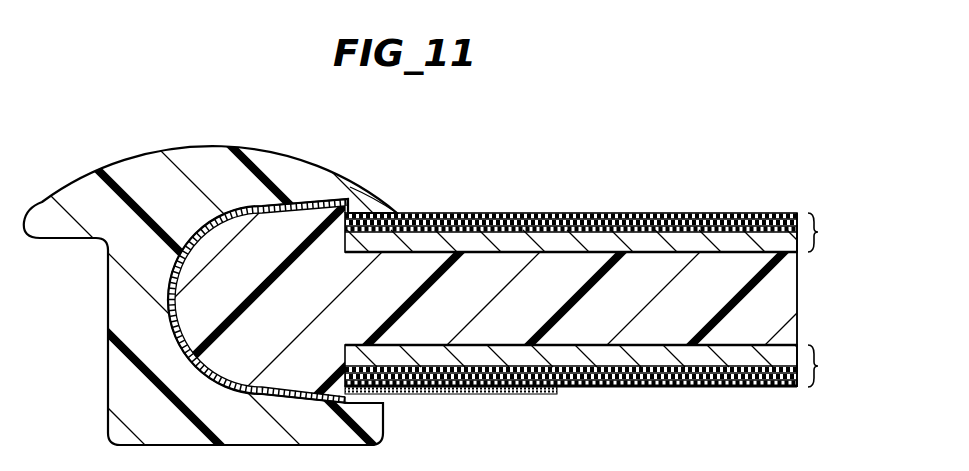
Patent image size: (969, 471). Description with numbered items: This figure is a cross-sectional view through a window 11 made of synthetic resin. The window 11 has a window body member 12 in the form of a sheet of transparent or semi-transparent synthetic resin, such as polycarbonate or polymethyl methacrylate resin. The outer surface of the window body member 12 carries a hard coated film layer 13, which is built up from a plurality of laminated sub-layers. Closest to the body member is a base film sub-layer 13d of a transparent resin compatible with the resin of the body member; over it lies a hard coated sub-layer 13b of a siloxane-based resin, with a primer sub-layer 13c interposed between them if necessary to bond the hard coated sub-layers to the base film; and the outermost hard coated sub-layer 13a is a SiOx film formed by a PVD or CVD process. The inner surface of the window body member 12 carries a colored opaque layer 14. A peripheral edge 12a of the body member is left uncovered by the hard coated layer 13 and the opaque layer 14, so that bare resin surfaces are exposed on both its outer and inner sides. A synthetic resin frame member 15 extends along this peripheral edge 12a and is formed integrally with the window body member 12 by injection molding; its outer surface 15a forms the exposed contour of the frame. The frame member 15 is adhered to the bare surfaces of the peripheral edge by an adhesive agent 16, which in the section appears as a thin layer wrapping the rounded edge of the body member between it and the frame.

The window 11 is at (488, 195).
The window body member 12 is at (770, 305).
The peripheral edge 12a is at (316, 210).
The hard coated film layer 13 is at (598, 300).
The hard coated sub-layer 13a is at (591, 215).
The hard coated sub-layer 13b is at (647, 215).
The primer sub-layer 13c is at (708, 215).
The base film sub-layer 13d is at (762, 244).
The colored opaque layer 14 is at (477, 394).
The frame member 15 is at (139, 160).
The curved surface of frame 15a is at (389, 205).
The adhesive agent 16 is at (252, 206).